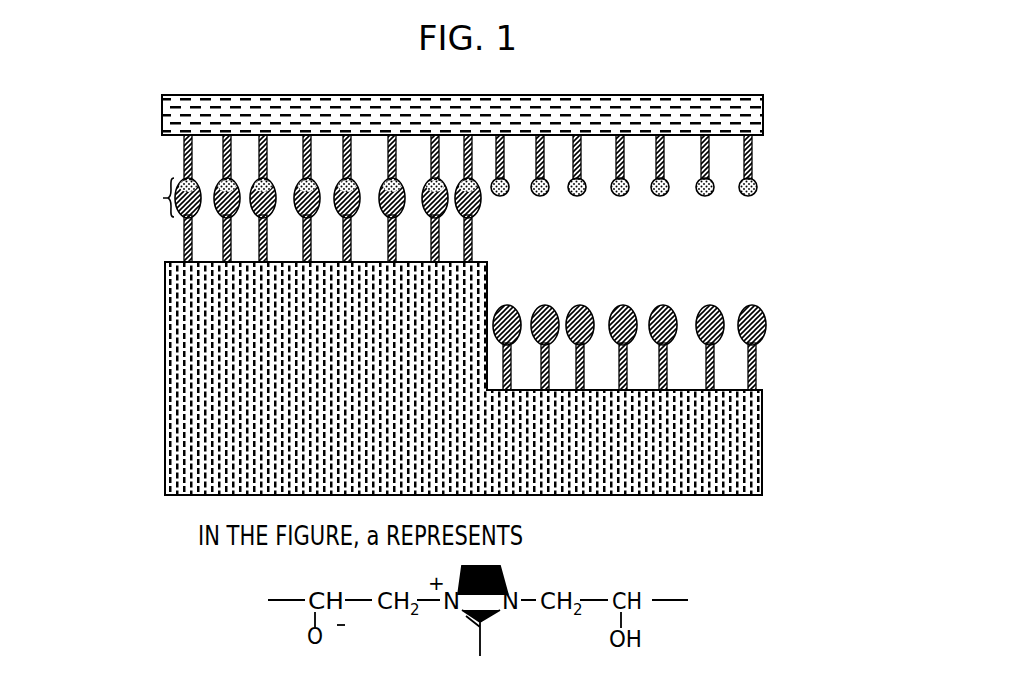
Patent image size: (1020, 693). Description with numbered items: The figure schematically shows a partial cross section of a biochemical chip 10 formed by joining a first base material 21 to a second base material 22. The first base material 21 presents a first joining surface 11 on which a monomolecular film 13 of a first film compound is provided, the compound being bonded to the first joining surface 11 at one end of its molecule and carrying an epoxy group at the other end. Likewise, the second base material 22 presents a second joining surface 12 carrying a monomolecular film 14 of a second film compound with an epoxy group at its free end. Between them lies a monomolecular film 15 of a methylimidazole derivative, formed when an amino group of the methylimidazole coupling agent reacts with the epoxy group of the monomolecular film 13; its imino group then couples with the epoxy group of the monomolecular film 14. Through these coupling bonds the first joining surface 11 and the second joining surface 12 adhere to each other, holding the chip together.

The biochemical chip 10 is at (756, 254).
The first joining surface 11 is at (170, 246).
The second joining surface 12 is at (164, 153).
The monomolecular film of the first film compound 13 is at (491, 230).
The monomolecular film of the second film compound 14 is at (766, 161).
The monomolecular film of the 2-methylimidazole derivative 15 is at (778, 314).
The first base material 21 is at (693, 495).
The second base material 22 is at (650, 104).